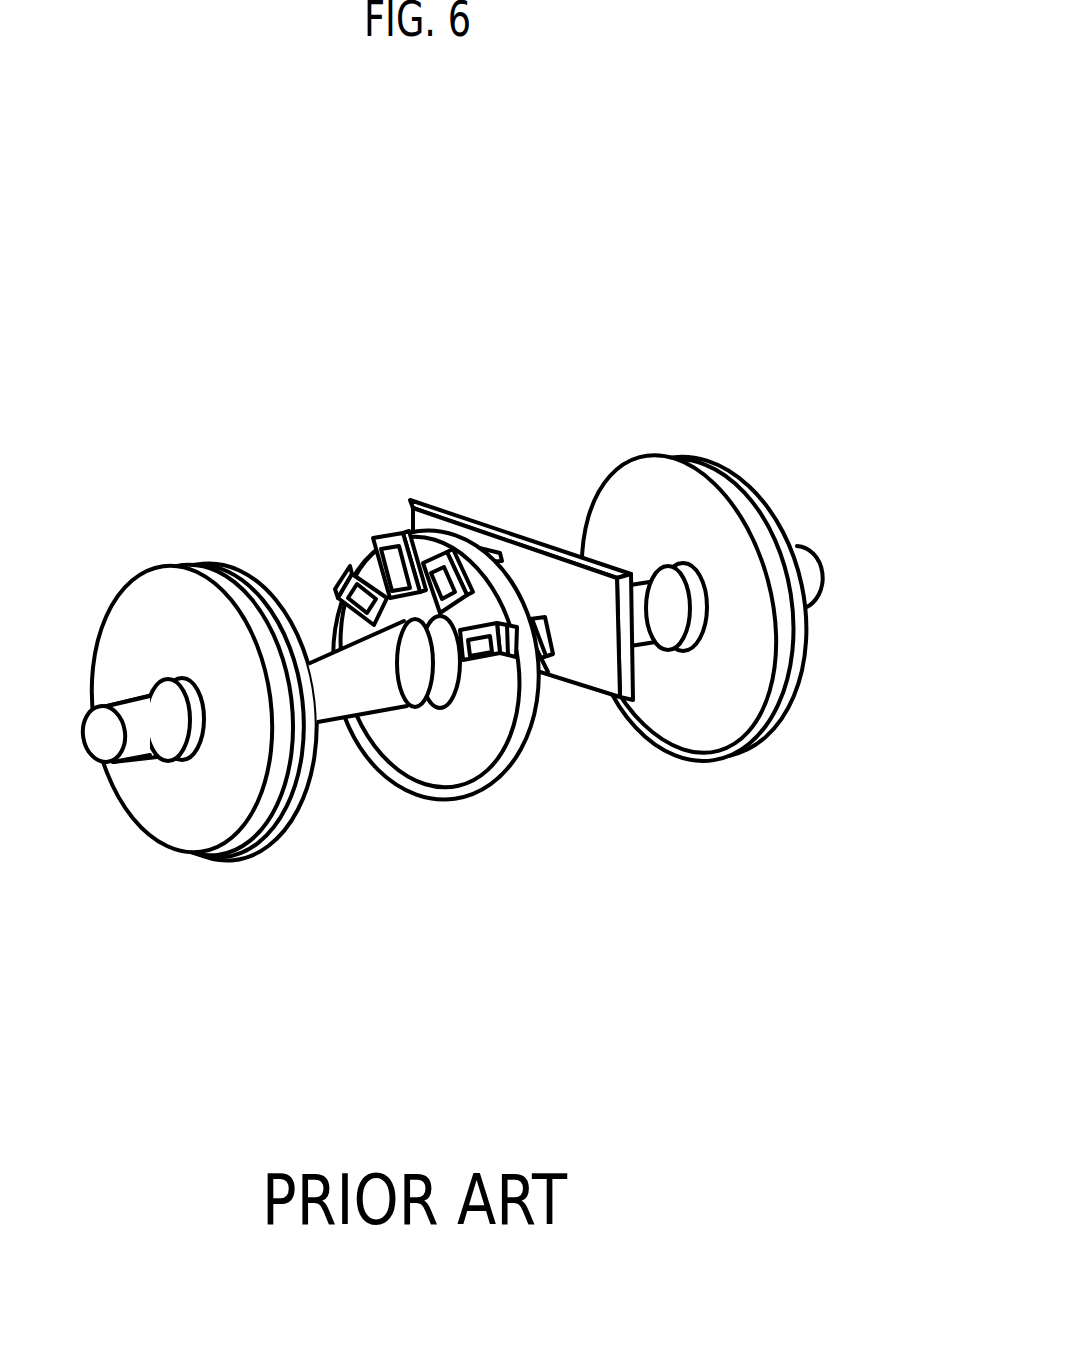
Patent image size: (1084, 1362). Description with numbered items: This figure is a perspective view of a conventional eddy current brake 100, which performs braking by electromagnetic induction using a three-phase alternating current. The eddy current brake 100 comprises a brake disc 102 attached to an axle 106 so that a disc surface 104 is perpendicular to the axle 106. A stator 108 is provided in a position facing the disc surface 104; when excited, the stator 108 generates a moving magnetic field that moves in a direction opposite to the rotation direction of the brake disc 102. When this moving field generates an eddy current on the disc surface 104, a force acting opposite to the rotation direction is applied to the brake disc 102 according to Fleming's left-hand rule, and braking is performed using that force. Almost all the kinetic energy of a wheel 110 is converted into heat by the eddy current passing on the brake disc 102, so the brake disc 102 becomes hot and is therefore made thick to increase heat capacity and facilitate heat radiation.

The eddy current brake 100 is at (848, 318).
The brake disc 102 is at (520, 762).
The disc surface 104 is at (445, 765).
The axle 106 is at (333, 697).
The stator 108 is at (380, 537).
The wheel 110 is at (728, 468).